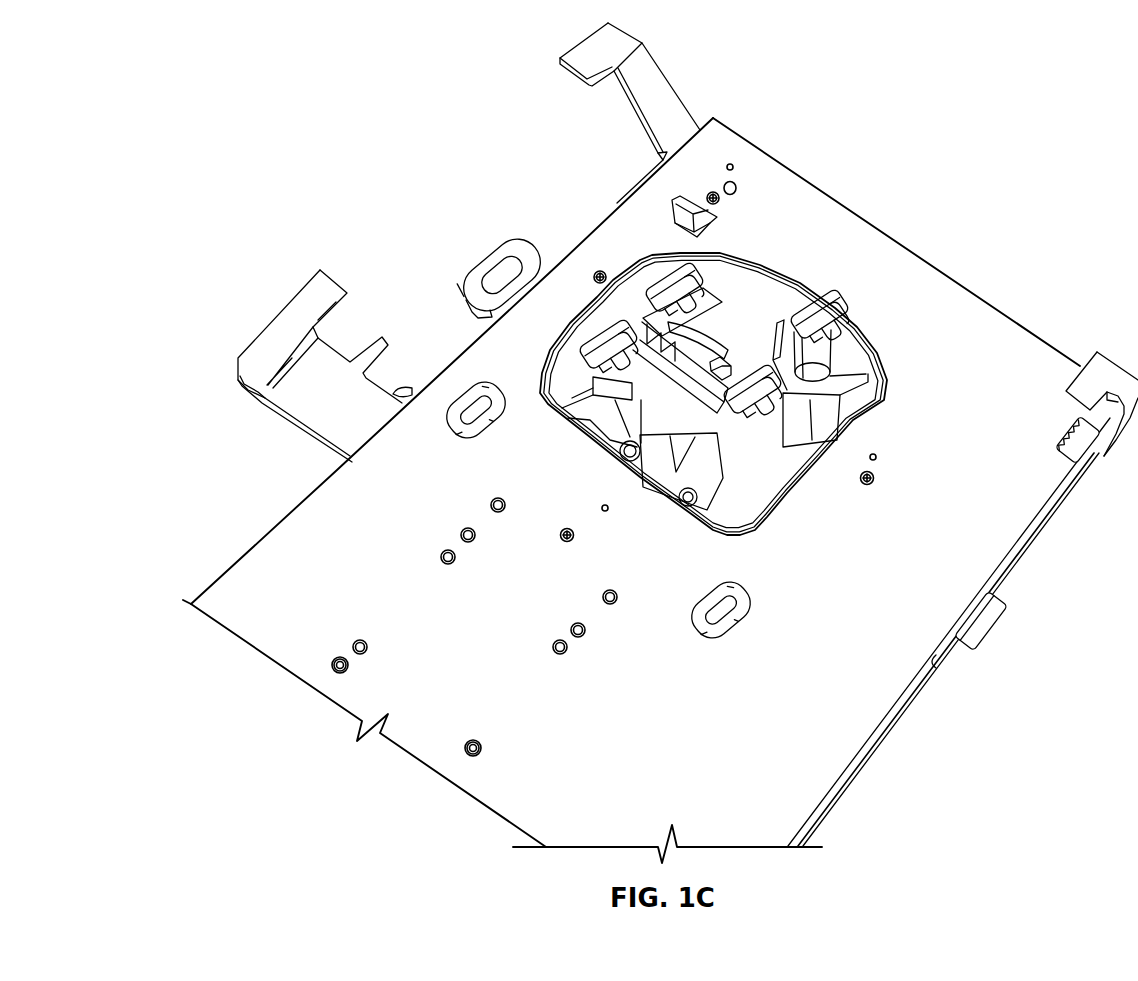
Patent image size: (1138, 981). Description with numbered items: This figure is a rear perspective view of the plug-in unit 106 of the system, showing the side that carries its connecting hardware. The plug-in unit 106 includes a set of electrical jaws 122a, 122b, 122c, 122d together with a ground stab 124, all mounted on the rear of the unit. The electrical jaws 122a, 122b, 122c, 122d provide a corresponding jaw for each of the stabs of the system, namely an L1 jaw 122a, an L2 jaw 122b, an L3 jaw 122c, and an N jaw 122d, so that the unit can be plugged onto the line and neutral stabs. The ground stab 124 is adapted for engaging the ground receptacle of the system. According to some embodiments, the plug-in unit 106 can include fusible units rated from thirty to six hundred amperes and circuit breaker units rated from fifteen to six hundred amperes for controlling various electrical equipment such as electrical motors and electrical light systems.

The plug-in unit 106 is at (301, 90).
The ground stab 124 is at (683, 200).
The electrical jaw 122a is at (830, 306).
The electrical jaw 122b is at (683, 267).
The electrical jaw 122c is at (778, 400).
The electrical jaw 122d is at (597, 343).